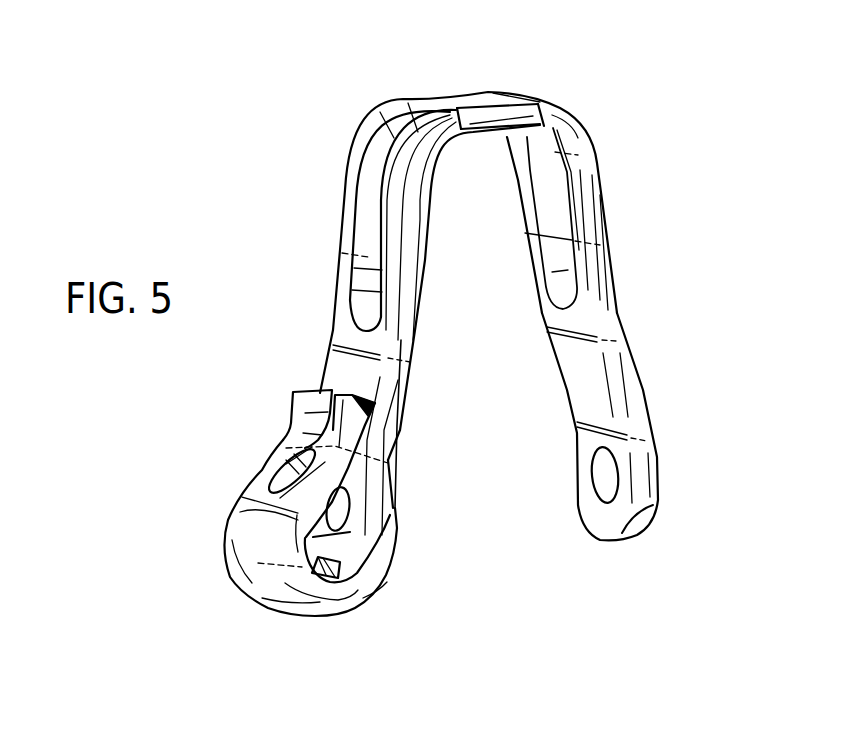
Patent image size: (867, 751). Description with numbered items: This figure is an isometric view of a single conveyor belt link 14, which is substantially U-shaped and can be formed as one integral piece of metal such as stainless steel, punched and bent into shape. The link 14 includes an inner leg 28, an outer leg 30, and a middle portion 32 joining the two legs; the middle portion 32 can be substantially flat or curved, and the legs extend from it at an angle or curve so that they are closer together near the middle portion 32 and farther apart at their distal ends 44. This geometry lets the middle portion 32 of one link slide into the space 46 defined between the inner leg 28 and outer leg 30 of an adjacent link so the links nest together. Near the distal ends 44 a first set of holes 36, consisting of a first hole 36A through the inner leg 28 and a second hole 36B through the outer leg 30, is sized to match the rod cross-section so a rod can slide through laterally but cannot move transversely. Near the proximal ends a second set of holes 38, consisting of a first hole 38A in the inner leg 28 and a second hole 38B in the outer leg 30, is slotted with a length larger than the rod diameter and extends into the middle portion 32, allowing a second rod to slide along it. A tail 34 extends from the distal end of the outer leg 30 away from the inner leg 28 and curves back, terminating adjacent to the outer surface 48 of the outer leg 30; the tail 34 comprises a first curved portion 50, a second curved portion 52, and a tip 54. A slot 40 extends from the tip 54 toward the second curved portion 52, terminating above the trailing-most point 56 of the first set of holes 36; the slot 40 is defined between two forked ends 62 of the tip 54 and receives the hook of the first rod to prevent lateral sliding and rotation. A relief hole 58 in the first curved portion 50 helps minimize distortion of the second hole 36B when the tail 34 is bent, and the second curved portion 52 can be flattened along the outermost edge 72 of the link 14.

The link 14 is at (312, 42).
The inner leg 28 is at (626, 128).
The outer leg 30 is at (242, 240).
The middle portion 32 is at (457, 83).
The tail 34 is at (300, 620).
The first set of holes 36 is at (660, 467).
The first hole 36A is at (599, 490).
The second hole 36B is at (343, 505).
The second set of holes 38 is at (342, 175).
The first hole 38A is at (569, 203).
The second hole 38B is at (375, 202).
The slot 40 is at (284, 467).
The distal ends 44 is at (547, 367).
The space 46 is at (508, 318).
The outer surface 48 is at (334, 363).
The first curved portion 50 is at (365, 605).
The second curved portion 52 is at (244, 543).
The tip 54 is at (315, 387).
The trailing-most point 56 is at (358, 533).
The hole 58 is at (332, 585).
The forked ends 62 is at (292, 411).
The outermost edge 72 is at (247, 559).